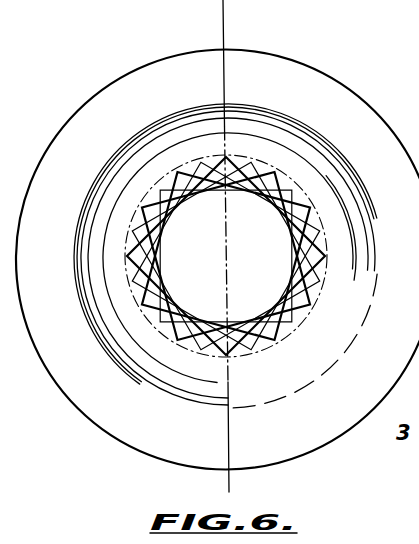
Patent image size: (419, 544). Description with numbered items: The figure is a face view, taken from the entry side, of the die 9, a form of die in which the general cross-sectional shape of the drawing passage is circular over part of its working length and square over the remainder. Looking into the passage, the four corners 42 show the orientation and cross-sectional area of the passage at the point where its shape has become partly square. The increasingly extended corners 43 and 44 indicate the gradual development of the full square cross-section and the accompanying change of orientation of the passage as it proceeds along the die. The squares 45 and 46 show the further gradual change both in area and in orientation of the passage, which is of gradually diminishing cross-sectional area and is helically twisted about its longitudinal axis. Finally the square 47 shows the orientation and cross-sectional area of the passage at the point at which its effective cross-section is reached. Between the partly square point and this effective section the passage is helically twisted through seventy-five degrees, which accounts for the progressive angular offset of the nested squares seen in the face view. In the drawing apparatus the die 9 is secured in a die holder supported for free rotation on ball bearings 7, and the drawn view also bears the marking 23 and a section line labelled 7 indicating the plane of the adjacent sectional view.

The ball bearings 7 is at (223, 28).
The die 9 is at (326, 78).
The housing flange 23 is at (401, 80).
The four corners 42 is at (227, 157).
The increasingly extended corners 43 is at (253, 167).
The increasingly extended corners 44 is at (322, 149).
The square 45 is at (292, 197).
The square 46 is at (327, 219).
The square 47 is at (327, 241).